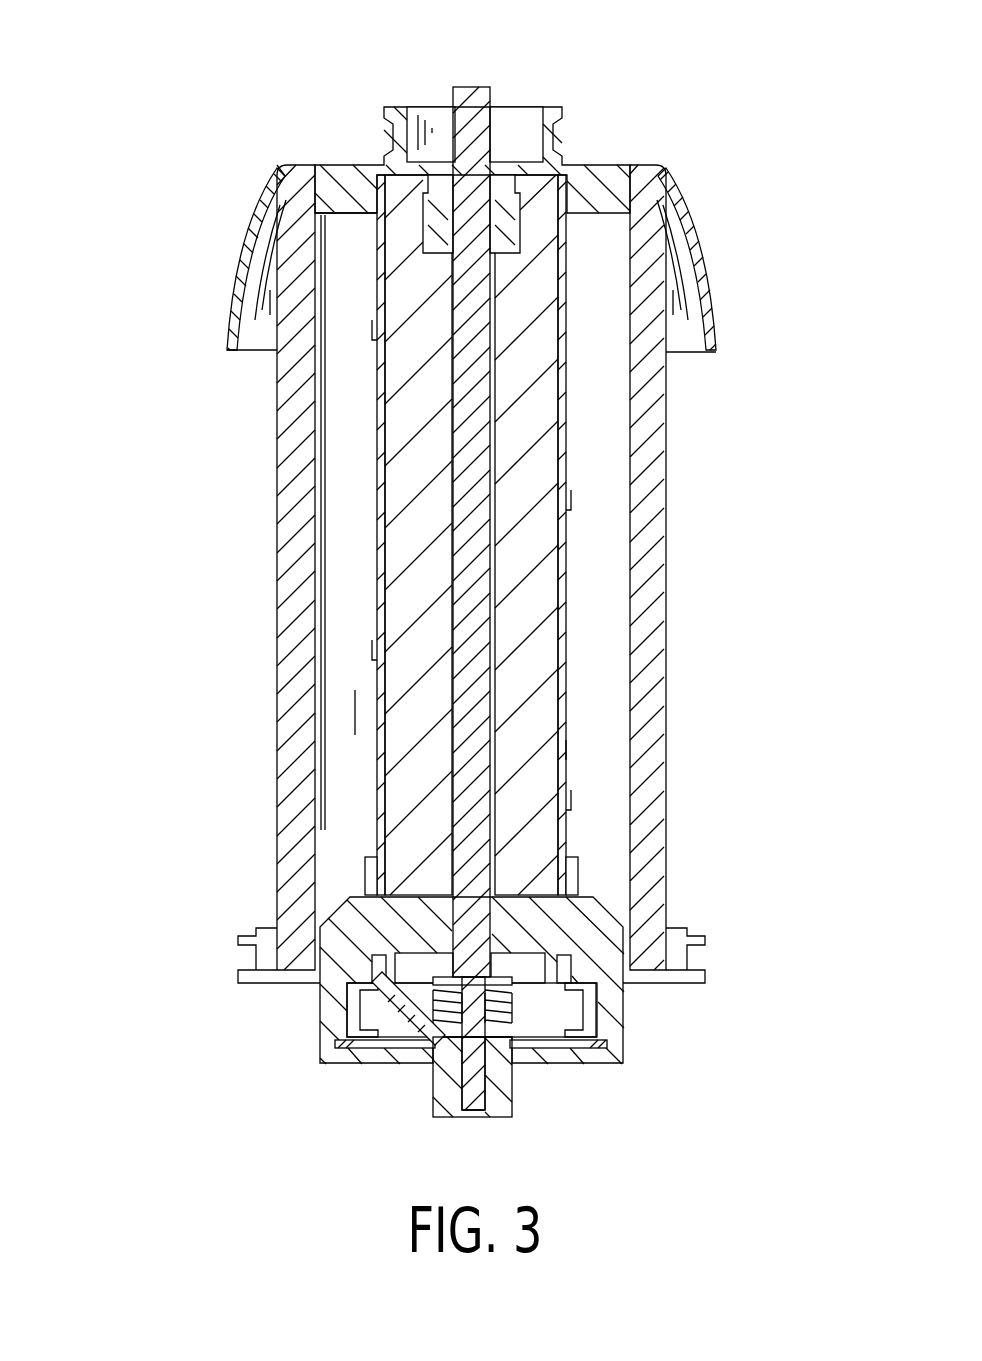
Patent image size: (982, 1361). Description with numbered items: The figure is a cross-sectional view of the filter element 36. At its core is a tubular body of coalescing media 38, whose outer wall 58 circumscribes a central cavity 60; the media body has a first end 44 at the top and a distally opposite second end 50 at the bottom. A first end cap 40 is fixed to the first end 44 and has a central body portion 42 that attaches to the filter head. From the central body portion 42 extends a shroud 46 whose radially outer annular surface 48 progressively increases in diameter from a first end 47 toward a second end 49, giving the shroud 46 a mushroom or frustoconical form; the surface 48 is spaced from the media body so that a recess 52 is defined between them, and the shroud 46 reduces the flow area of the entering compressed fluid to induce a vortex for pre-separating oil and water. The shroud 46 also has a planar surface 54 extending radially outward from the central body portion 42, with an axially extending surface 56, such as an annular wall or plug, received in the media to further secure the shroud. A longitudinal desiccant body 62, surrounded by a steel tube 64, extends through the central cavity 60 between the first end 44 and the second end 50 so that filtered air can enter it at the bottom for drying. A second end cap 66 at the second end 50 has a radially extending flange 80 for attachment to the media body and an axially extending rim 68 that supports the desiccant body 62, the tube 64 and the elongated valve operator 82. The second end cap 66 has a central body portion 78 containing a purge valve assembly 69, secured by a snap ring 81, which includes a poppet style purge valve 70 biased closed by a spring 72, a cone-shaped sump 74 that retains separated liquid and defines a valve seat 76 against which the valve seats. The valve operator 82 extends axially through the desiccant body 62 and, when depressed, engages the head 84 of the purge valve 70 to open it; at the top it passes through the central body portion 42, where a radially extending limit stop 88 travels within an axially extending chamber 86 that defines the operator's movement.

The filter element 36 is at (136, 62).
The body of coalescing media 38 is at (663, 458).
The first end cap 40 is at (673, 178).
The central body portion 42 is at (553, 108).
The first end 44 is at (656, 236).
The shroud 46 is at (247, 218).
The first end 47 is at (273, 177).
The outer annular surface 48 is at (708, 262).
The second end 49 is at (237, 352).
The second end 50 is at (665, 913).
The recess 52 is at (695, 327).
The planar surface 54 is at (320, 168).
The axially extending surface 56 is at (353, 202).
The outer wall 58 is at (662, 592).
The central cavity 60 is at (612, 678).
The desiccant body 62 is at (548, 830).
The steel tube 64 is at (572, 750).
The second end cap 66 is at (608, 968).
The axially extending rim 68 is at (365, 873).
The purge valve assembly 69 is at (526, 1073).
The purge valve 70 is at (460, 1088).
The spring 72 is at (437, 1005).
The sump 74 is at (553, 1017).
The valve seat 76 is at (470, 1112).
The central body portion 78 is at (610, 1008).
The radially extending flange 80 is at (252, 977).
The snap ring 81 is at (393, 1040).
The elongated valve operator 82 is at (470, 882).
The head 84 is at (427, 980).
The axially extending chamber 86 is at (517, 217).
The radially extending limit stop 88 is at (500, 190).